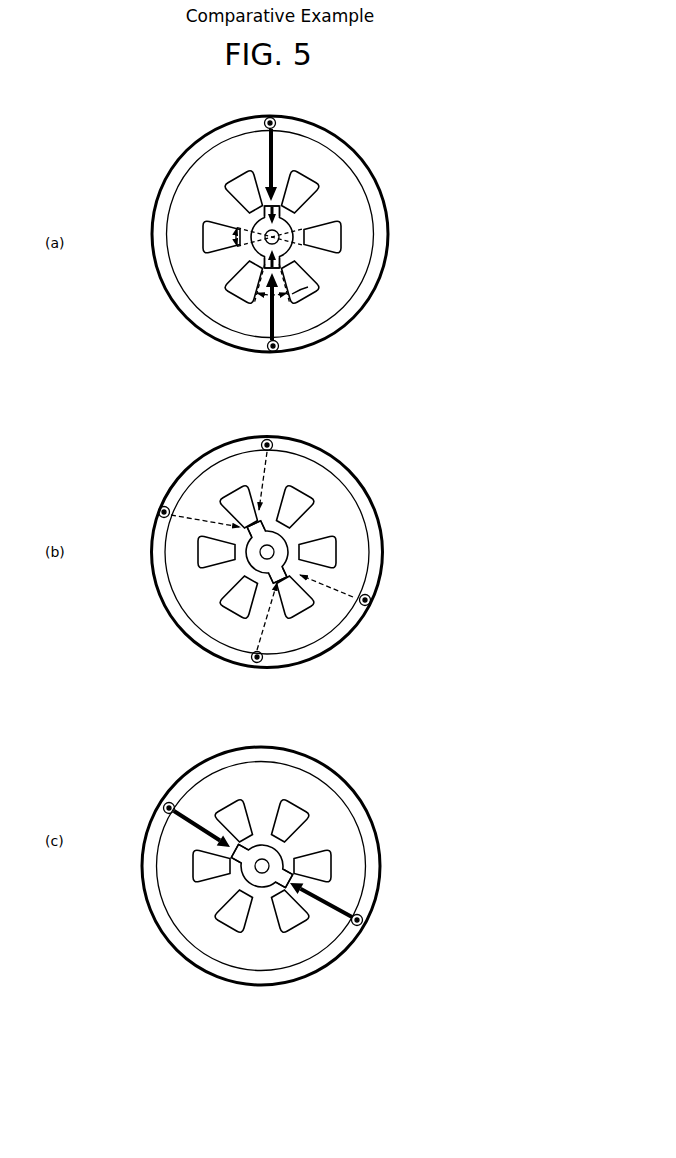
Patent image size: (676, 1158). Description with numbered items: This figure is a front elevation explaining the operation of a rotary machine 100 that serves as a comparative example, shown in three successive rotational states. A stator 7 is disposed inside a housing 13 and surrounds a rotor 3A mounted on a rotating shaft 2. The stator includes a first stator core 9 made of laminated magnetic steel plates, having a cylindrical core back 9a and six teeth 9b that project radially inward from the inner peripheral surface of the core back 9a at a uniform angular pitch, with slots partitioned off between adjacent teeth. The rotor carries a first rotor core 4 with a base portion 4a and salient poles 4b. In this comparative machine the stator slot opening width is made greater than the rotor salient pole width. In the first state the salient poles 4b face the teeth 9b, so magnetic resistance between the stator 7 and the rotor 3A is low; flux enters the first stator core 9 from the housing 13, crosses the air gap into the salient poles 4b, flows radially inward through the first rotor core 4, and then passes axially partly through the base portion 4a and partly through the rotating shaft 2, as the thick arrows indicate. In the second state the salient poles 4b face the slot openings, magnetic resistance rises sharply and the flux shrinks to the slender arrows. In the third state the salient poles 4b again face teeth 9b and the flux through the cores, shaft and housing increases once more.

The rotary machine 100 is at (269, 540).
The housing 13 is at (263, 550).
The stator 7 is at (239, 551).
The rotor 3A is at (227, 557).
The first stator core 9 is at (289, 522).
The core back 9a is at (300, 520).
The teeth 9b is at (323, 508).
The first rotor core 4 is at (324, 552).
The base portion 4a is at (332, 547).
The salient poles 4b is at (332, 538).
The rotating shaft 2 is at (331, 551).